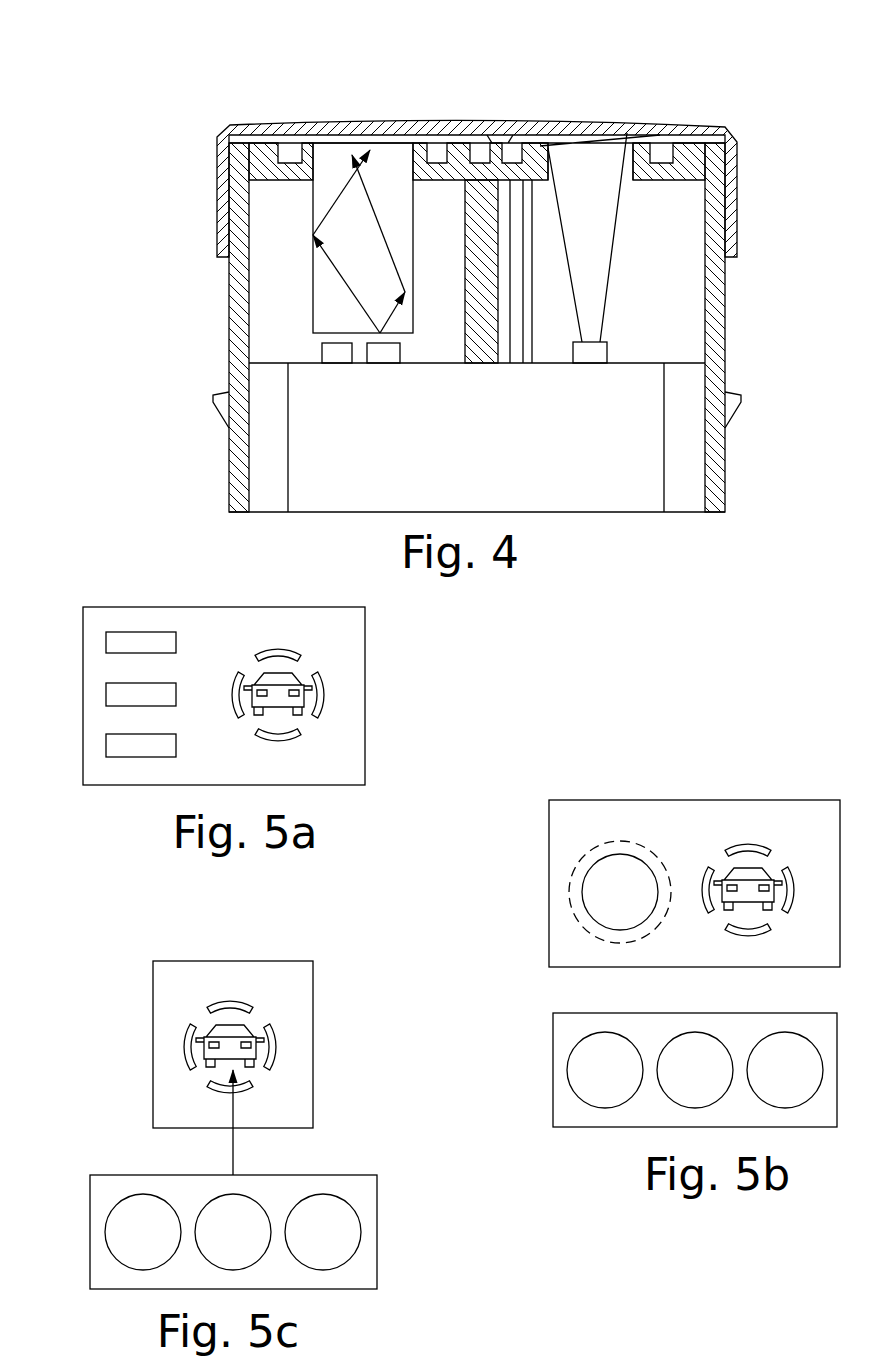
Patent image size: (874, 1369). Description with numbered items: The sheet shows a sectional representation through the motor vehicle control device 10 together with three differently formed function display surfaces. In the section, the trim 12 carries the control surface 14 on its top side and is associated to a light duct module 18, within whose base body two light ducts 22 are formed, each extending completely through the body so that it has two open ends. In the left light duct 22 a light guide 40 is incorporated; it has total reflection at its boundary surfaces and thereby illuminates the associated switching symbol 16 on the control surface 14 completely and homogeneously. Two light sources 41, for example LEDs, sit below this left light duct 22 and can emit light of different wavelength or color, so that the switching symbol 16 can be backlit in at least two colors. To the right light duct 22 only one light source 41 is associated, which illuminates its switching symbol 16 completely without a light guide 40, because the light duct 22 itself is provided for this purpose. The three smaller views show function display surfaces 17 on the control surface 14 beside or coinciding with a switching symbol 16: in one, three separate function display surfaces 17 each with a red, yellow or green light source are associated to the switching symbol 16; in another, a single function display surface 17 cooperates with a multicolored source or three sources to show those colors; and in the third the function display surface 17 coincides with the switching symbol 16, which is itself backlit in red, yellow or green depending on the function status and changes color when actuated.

In FIG. 4, the motor vehicle control device 10 is at (200, 97).
In FIG. 4, the trim 12 is at (276, 126).
In FIG. 4, the control surface 14 is at (703, 123).
In FIG. 5A, the control surface 14 is at (196, 605).
In FIG. 5B, the control surface 14 is at (597, 800).
In FIG. 5C, the control surface 14 is at (176, 961).
In FIG. 4, the switching symbol 16 is at (385, 122).
In FIG. 5A, the switching symbol 16 is at (322, 695).
In FIG. 5B, the switching symbol 16 is at (748, 855).
In FIG. 5C, the switching symbol 16 is at (222, 1017).
In FIG. 5A, the function display surface 17 is at (107, 641).
In FIG. 5B, the function display surface 17 is at (605, 890).
In FIG. 5C, the function display surface 17 is at (246, 1010).
In FIG. 4, the light duct module 18 is at (230, 296).
In FIG. 4, the light duct 22 is at (343, 145).
In FIG. 4, the light guide 40 is at (398, 160).
In FIG. 4, the light source 41 is at (340, 350).